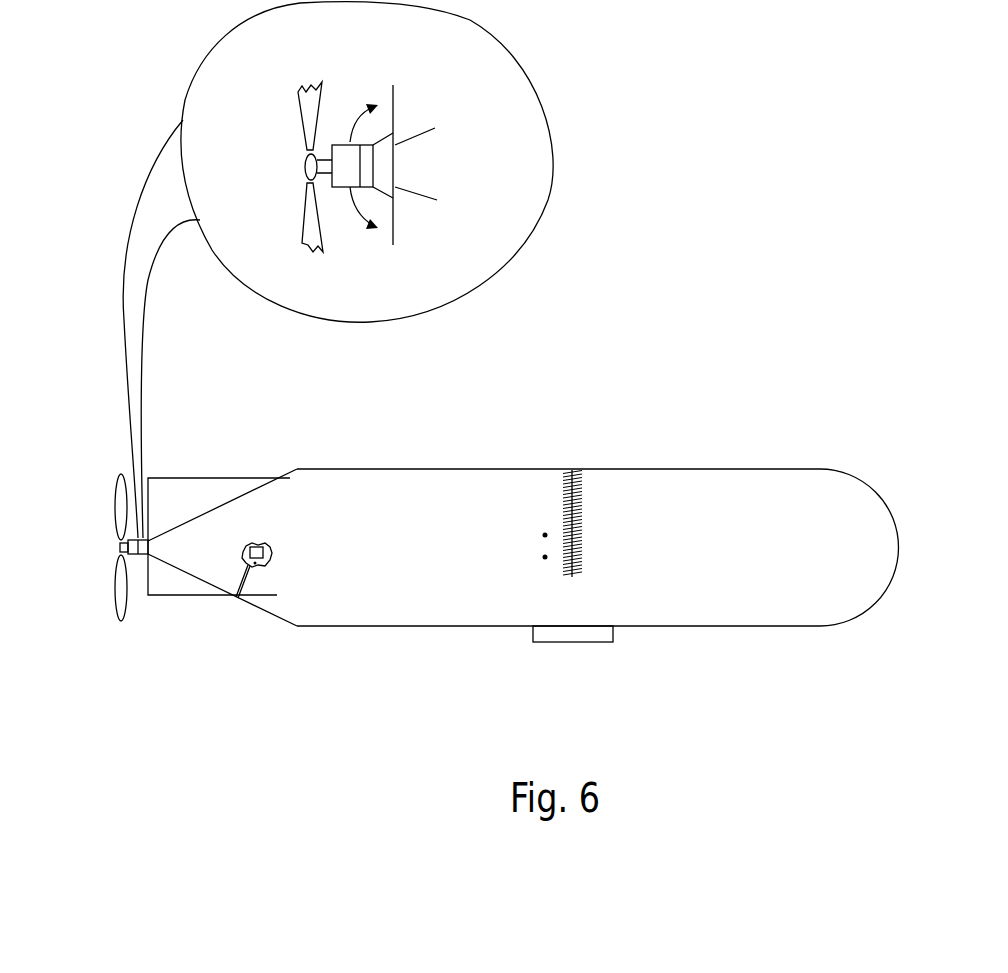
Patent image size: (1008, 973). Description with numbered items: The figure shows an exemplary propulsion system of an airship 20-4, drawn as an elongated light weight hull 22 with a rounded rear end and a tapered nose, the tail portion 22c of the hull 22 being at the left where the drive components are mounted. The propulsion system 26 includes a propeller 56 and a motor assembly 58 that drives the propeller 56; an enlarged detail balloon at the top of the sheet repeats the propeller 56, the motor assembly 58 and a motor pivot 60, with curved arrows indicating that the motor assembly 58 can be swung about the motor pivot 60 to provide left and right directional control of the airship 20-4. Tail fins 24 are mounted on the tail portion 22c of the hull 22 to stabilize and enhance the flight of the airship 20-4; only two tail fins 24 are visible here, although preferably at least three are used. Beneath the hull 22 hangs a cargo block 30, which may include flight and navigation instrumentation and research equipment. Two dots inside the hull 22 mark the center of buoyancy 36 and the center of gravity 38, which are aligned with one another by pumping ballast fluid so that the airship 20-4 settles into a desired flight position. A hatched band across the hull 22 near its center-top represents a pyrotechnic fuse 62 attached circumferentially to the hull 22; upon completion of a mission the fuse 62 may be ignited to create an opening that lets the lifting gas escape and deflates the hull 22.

The airship 20-4 is at (783, 372).
The hull 22 is at (658, 469).
The tail portion of the hull 22c is at (235, 563).
The tail fins 24 is at (200, 479).
The propulsion system 26 is at (117, 430).
The cargo block 30 is at (533, 641).
The center of buoyancy 36 is at (545, 532).
The center of gravity 38 is at (545, 557).
The propeller 56 is at (117, 617).
The motor assembly 58 is at (137, 540).
The motor pivot 60 is at (148, 541).
The pyrotechnic fuse 62 is at (583, 519).